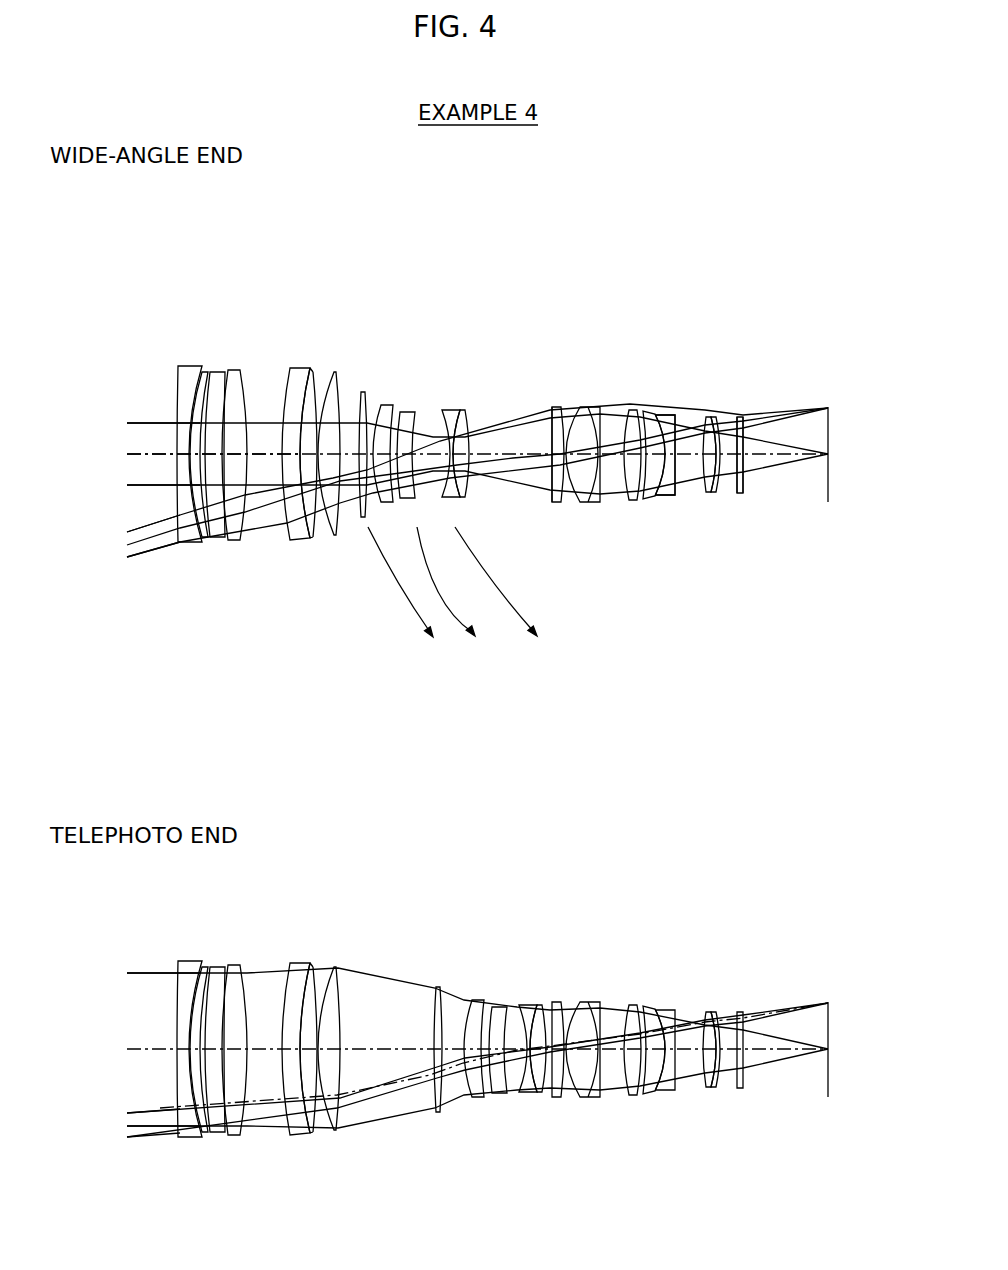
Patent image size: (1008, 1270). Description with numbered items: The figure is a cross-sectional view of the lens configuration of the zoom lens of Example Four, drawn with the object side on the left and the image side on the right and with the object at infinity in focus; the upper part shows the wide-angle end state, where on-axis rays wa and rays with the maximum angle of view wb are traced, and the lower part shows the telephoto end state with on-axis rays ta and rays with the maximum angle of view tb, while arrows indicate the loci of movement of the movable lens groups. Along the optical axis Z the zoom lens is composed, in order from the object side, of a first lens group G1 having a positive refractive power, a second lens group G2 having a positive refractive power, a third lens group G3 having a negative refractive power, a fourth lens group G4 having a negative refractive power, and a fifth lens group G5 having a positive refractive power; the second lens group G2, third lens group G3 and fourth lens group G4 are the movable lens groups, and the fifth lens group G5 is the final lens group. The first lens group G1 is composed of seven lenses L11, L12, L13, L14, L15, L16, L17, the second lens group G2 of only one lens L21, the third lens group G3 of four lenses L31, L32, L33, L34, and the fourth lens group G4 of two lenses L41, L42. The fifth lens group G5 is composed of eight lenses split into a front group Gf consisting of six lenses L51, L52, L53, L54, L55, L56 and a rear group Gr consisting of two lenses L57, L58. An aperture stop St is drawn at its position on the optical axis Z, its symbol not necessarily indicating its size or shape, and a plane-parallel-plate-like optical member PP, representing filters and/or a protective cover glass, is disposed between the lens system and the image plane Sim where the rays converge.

The first lens group G1 is at (350, 265).
The second lens group G2 is at (400, 265).
The third lens group G3 is at (530, 265).
The fourth lens group G4 is at (600, 265).
The fifth lens group G5 is at (865, 222).
The front group Gf is at (785, 265).
The rear group Gr is at (865, 265).
The lens L11 is at (178, 367).
The lens L12 is at (207, 370).
The lens L13 is at (218, 371).
The lens L14 is at (234, 369).
The lens L15 is at (297, 367).
The lens L16 is at (312, 370).
The lens L17 is at (340, 371).
The lens L21 is at (363, 392).
The lens L31 is at (387, 406).
The lens L32 is at (395, 410).
The lens L33 is at (405, 410).
The lens L34 is at (450, 410).
The lens L41 is at (460, 409).
The lens L42 is at (560, 407).
The lens L51 is at (580, 407).
The lens L52 is at (597, 408).
The lens L53 is at (653, 412).
The lens L54 is at (668, 415).
The lens L55 is at (708, 418).
The lens L56 is at (717, 418).
The lens L57 is at (738, 417).
The lens L58 is at (743, 417).
The aperture stop St is at (546, 503).
The optical member PP is at (740, 494).
The image plane Sim is at (829, 503).
The optical axis Z is at (128, 423).
The on-axis rays wa is at (115, 420).
The rays with the maximum angle of view wb is at (115, 522).
The on-axis rays ta is at (79, 968).
The rays with the maximum angle of view tb is at (117, 1140).